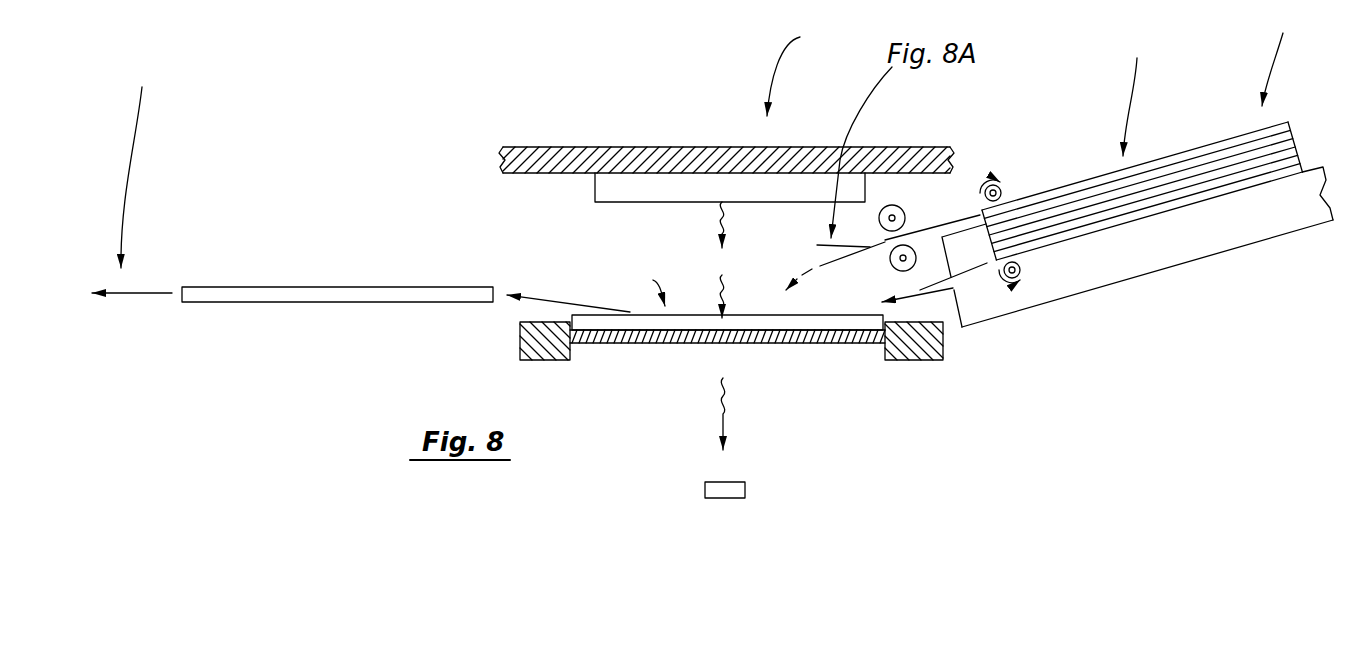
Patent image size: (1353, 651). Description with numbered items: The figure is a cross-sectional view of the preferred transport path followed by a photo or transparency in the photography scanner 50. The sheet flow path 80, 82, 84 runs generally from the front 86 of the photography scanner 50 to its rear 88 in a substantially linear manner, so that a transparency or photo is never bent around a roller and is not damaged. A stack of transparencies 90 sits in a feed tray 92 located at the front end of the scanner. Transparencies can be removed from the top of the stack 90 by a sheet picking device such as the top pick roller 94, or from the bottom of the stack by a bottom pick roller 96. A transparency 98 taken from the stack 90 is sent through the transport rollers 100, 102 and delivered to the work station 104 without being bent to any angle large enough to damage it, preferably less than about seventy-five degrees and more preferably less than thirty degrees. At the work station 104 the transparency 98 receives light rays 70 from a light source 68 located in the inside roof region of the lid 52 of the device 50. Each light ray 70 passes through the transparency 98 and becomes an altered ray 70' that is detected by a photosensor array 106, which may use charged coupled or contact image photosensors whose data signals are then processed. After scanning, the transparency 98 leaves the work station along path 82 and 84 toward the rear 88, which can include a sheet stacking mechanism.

The photography scanner 50 is at (801, 63).
The lid 52 is at (510, 148).
The light source 68 is at (628, 183).
The light rays 70 is at (680, 260).
The altered ray 70' is at (676, 414).
The sheet flow path 80 is at (938, 290).
The sheet flow path 82 is at (562, 303).
The sheet flow path 84 is at (148, 290).
The front 86 is at (1286, 56).
The rear 88 is at (140, 161).
The stack of transparencies 90 is at (1142, 143).
The feed tray 92 is at (1183, 240).
The top pick roller 94 is at (993, 184).
The bottom pick roller 96 is at (1022, 270).
The transparency 98 is at (353, 287).
The transport roller 100 is at (902, 210).
The transport roller 102 is at (891, 264).
The work station 104 is at (636, 287).
The photosensor array 106 is at (747, 490).